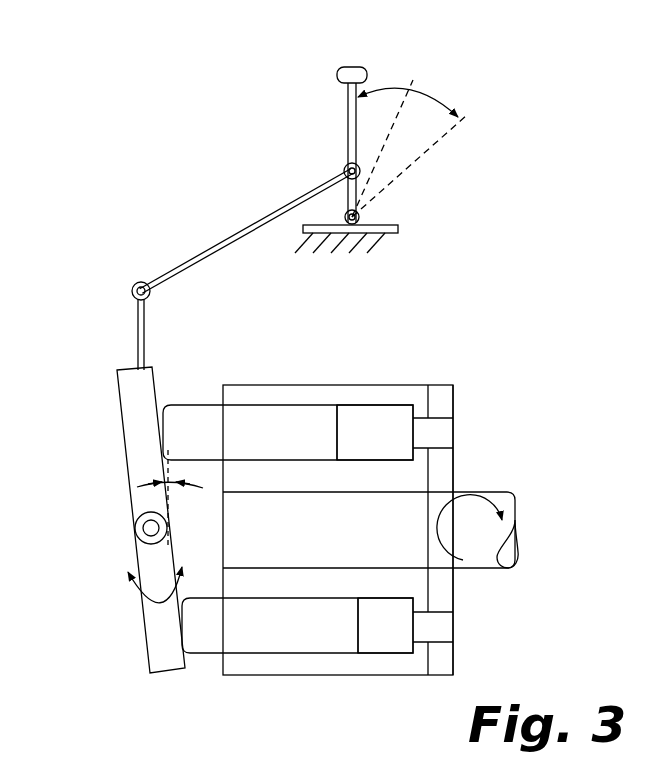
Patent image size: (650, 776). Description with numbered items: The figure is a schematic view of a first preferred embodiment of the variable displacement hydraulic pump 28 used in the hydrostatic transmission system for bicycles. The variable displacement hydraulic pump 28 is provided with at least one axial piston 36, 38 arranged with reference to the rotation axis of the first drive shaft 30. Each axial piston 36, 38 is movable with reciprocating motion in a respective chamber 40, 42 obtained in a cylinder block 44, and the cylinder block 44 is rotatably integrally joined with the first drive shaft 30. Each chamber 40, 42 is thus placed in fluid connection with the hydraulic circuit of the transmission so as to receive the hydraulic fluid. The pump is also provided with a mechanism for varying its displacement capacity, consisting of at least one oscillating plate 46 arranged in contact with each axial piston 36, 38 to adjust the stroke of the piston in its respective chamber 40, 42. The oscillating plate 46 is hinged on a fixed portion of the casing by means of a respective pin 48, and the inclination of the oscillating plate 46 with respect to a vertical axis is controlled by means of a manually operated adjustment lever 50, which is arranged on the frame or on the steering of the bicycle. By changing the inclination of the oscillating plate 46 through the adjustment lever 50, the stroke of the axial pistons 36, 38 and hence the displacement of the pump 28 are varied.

The variable displacement hydraulic pump 28 is at (488, 450).
The first drive shaft 30 is at (473, 555).
The axial piston 36 is at (283, 432).
The axial piston 38 is at (281, 630).
The chamber 40 is at (387, 420).
The chamber 42 is at (387, 630).
The cylinder block 44 is at (352, 385).
The oscillating plate 46 is at (120, 425).
The pin 48 is at (135, 533).
The manually operated adjustment lever 50 is at (352, 117).